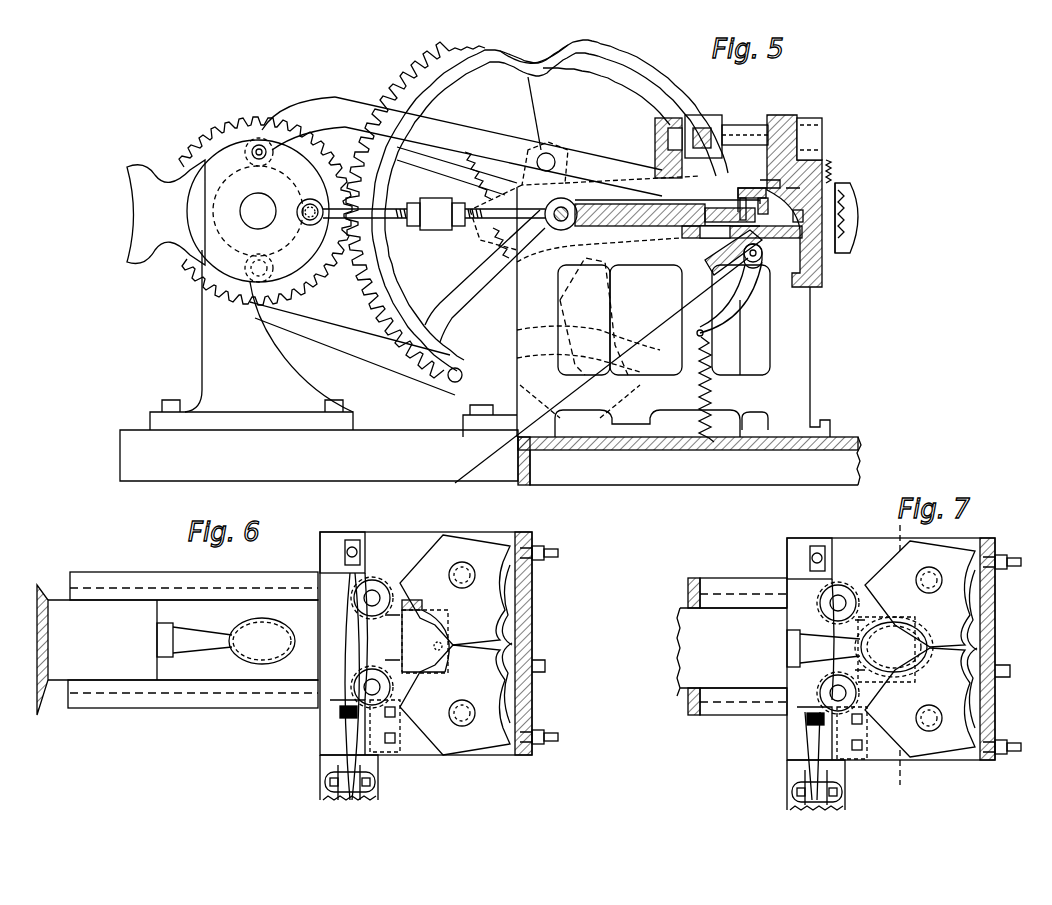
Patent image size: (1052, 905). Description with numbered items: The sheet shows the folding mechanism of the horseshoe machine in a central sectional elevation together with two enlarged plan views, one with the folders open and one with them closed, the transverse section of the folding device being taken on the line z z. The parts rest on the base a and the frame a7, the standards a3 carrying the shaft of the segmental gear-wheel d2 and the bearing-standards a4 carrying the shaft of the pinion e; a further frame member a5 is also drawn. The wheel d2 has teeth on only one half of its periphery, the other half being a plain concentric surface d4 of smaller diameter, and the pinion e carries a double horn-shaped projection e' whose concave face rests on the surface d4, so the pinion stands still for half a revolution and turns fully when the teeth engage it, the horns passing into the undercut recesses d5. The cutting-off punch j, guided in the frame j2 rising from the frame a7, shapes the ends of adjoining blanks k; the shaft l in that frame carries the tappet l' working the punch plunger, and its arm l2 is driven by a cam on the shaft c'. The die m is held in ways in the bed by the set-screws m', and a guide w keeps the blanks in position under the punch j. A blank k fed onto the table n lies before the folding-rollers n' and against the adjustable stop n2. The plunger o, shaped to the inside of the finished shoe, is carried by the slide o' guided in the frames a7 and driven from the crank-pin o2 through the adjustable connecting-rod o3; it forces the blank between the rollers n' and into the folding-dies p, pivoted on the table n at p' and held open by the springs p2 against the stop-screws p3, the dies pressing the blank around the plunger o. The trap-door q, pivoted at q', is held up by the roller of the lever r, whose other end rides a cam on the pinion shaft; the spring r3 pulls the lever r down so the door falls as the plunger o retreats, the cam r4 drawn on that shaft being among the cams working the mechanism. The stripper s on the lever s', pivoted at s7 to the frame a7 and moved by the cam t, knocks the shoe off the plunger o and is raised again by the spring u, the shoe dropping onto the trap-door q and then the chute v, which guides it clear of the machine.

In FIG. 5, the base a is at (490, 457).
In FIG. 5, the standards a3 is at (594, 316).
In FIG. 5, the bearing-standards a4 is at (251, 340).
In FIG. 5, the frame arm a5 is at (524, 236).
In FIG. 5, the frame a7 is at (646, 312).
In FIG. 6, the frame a7 is at (193, 640).
In FIG. 7, the frame a7 is at (737, 646).
In FIG. 5, the shaft c' is at (856, 218).
In FIG. 5, the segmental or mutilated gear-wheel d2 is at (543, 113).
In FIG. 5, the plain concentric surface d4 is at (537, 209).
In FIG. 5, the undercut recesses d5 is at (534, 46).
In FIG. 5, the pinion e is at (265, 211).
In FIG. 5, the double horn-shaped projection e' is at (166, 212).
In FIG. 5, the cutting-off punch j is at (670, 148).
In FIG. 5, the frame j2 is at (780, 101).
In FIG. 6, the blank k is at (349, 686).
In FIG. 7, the blank k is at (860, 719).
In FIG. 5, the shaft l is at (745, 135).
In FIG. 5, the tappet l' is at (709, 136).
In FIG. 5, the arm l2 is at (805, 201).
In FIG. 6, the die m is at (343, 727).
In FIG. 7, the die m is at (810, 733).
In FIG. 6, the set-screws m' is at (391, 726).
In FIG. 7, the set-screws m' is at (852, 733).
In FIG. 5, the horizontal table n is at (742, 238).
In FIG. 6, the horizontal table n is at (432, 643).
In FIG. 7, the horizontal table n is at (898, 649).
In FIG. 6, the folding-rollers n' is at (372, 635).
In FIG. 7, the folding-rollers n' is at (832, 641).
In FIG. 6, the adjustable stop n2 is at (342, 552).
In FIG. 7, the adjustable stop n2 is at (809, 558).
In FIG. 5, the plunger o is at (667, 213).
In FIG. 6, the plunger o is at (226, 641).
In FIG. 7, the plunger o is at (805, 652).
In FIG. 5, the slide o' is at (650, 220).
In FIG. 6, the slide o' is at (177, 650).
In FIG. 5, the crank-pin o2 is at (310, 201).
In FIG. 5, the connecting-rod o3 is at (434, 222).
In FIG. 5, the folding-dies p is at (801, 210).
In FIG. 6, the folding-dies p is at (455, 645).
In FIG. 7, the folding-dies p is at (920, 649).
In FIG. 6, the pivots p' is at (463, 635).
In FIG. 7, the pivots p' is at (930, 639).
In FIG. 6, the springs p2 is at (502, 644).
In FIG. 7, the springs p2 is at (968, 649).
In FIG. 6, the adjustable stop-screws p3 is at (550, 641).
In FIG. 7, the adjustable stop-screws p3 is at (1013, 650).
In FIG. 5, the trap-door q is at (733, 252).
In FIG. 6, the trap-door q is at (382, 636).
In FIG. 7, the trap-door q is at (848, 639).
In FIG. 5, the pivot q' is at (763, 251).
In FIG. 5, the lever r is at (506, 370).
In FIG. 5, the spring r3 is at (716, 386).
In FIG. 5, the cam r4 is at (258, 224).
In FIG. 5, the stripper s is at (769, 200).
In FIG. 6, the stripper s is at (425, 636).
In FIG. 5, the lever s' is at (462, 143).
In FIG. 5, the pivot s7 is at (585, 176).
In FIG. 5, the cam t is at (266, 162).
In FIG. 5, the spring u is at (457, 202).
In FIG. 5, the chute v is at (588, 372).
In FIG. 6, the guide w is at (370, 796).
In FIG. 7, the guide w is at (826, 810).
In FIG. 7, the line z z is at (898, 647).